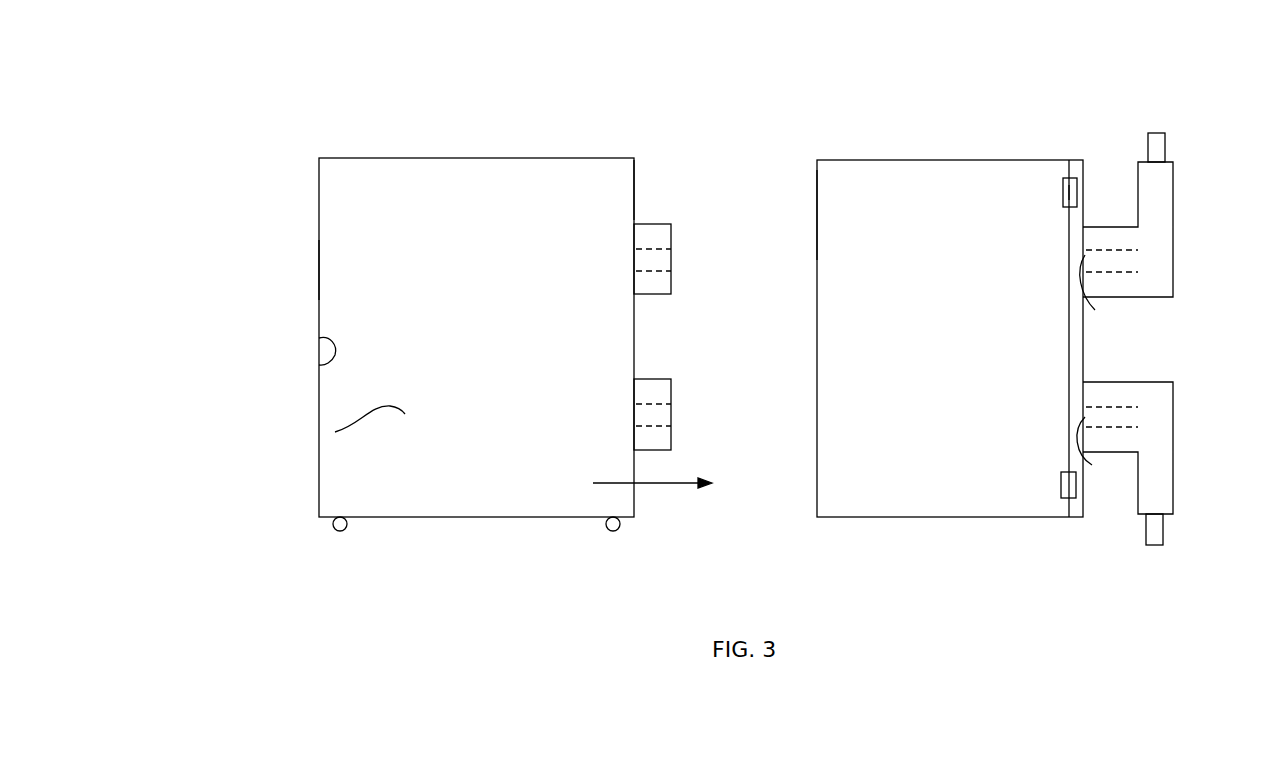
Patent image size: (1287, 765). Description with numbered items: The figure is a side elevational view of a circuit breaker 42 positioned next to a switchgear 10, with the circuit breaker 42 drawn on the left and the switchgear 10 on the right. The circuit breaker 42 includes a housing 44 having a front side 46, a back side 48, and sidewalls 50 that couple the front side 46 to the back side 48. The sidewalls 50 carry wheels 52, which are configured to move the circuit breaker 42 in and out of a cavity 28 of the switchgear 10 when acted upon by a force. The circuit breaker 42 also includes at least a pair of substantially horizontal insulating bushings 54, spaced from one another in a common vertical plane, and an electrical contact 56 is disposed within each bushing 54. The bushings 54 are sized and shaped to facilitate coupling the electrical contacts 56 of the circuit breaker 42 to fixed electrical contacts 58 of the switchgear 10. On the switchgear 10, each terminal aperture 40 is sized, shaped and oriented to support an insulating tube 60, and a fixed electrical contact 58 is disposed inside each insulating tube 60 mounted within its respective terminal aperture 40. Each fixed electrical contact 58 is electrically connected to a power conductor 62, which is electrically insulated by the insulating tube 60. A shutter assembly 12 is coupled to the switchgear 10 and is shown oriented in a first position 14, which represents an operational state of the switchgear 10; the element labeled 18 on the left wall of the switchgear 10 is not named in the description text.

The switchgear 10 is at (948, 108).
The shutter assembly 12 is at (1043, 193).
The first position 14 is at (1062, 160).
The door 18 is at (817, 200).
The cavity 28 is at (912, 210).
The terminal aperture 40 is at (1095, 310).
The circuit breaker 42 is at (299, 127).
The housing 44 is at (337, 282).
The front side 46 is at (634, 187).
The back side 48 is at (320, 338).
The sidewalls 50 is at (335, 432).
The wheels 52 is at (345, 530).
The insulating bushings 54 is at (652, 380).
The electrical contact 56 is at (651, 247).
The fixed electrical contact 58 is at (1120, 272).
The insulating tube 60 is at (1173, 220).
The power conductor 62 is at (1165, 148).